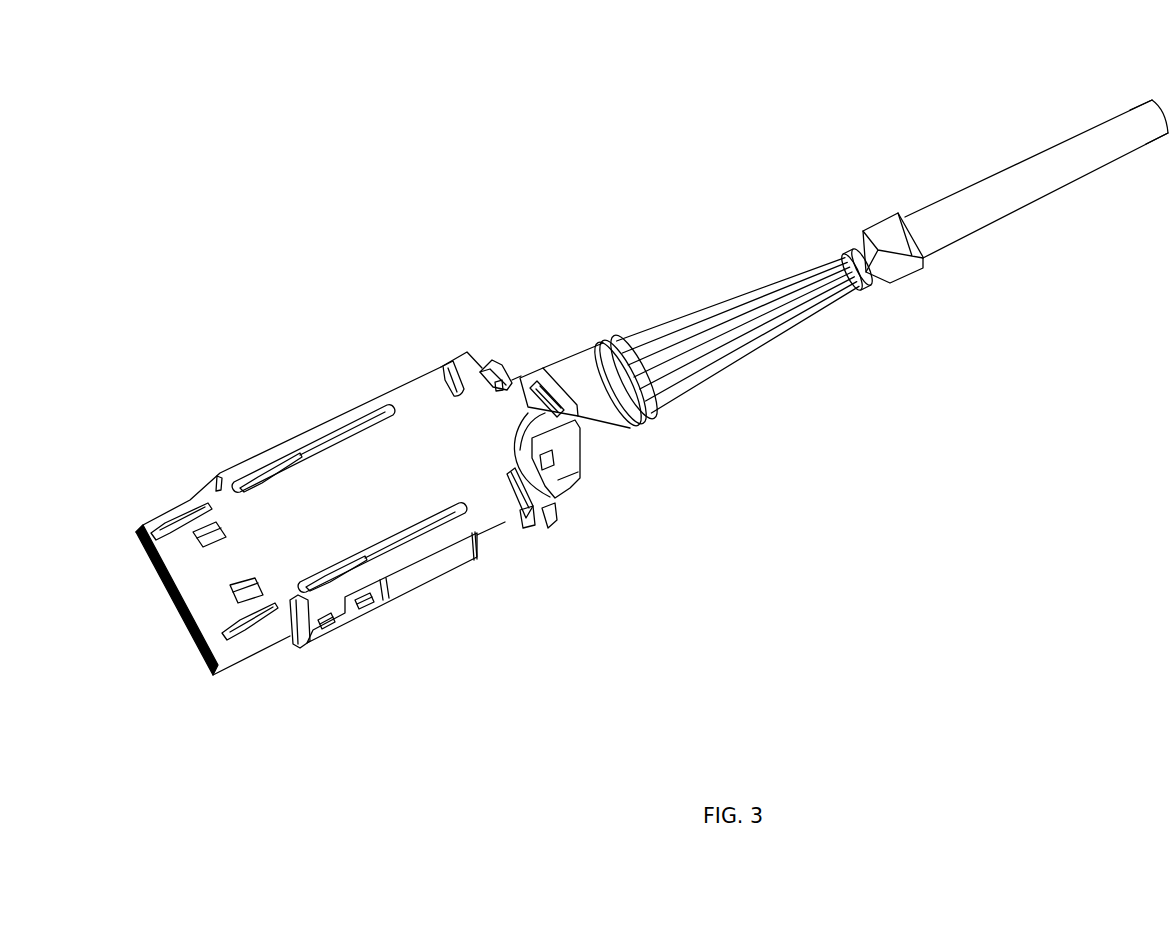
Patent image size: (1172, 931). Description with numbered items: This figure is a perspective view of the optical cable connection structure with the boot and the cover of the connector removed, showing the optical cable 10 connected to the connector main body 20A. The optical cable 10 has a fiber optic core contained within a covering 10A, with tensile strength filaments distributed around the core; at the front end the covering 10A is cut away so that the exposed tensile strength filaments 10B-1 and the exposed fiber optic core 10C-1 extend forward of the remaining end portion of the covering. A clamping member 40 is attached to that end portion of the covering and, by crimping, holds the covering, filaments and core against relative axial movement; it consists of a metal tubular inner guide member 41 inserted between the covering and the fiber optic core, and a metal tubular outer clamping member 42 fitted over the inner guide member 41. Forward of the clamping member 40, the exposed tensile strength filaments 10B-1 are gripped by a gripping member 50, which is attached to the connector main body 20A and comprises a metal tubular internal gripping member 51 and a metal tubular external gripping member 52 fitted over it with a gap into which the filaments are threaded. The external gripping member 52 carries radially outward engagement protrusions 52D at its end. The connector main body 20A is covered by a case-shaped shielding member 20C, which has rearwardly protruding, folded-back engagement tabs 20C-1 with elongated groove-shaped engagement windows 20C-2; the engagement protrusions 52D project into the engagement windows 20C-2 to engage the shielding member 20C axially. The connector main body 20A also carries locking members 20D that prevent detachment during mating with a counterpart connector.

The optical cable 10 is at (1064, 133).
The covering 10A is at (1128, 120).
The exposed tensile strength filaments 10B-1 is at (710, 300).
The exposed fiber optic core 10C-1 is at (810, 285).
The connector main body 20A is at (402, 382).
The shielding member 20C is at (358, 517).
The engagement tabs 20C-1 is at (566, 426).
The engagement windows 20C-2 is at (550, 496).
The locking members 20D is at (247, 623).
The clamping member 40 is at (948, 382).
The inner guide member 41 is at (868, 282).
The outer clamping member 42 is at (905, 255).
The gripping member 50 is at (647, 238).
The internal gripping member 51 is at (605, 343).
The external gripping member 52 is at (563, 363).
The engagement protrusions 52D is at (545, 395).